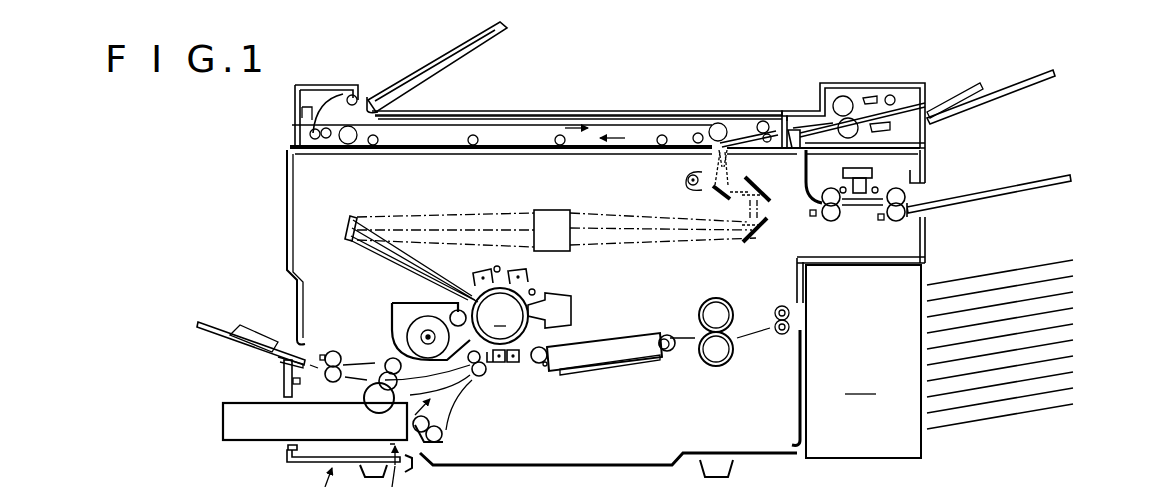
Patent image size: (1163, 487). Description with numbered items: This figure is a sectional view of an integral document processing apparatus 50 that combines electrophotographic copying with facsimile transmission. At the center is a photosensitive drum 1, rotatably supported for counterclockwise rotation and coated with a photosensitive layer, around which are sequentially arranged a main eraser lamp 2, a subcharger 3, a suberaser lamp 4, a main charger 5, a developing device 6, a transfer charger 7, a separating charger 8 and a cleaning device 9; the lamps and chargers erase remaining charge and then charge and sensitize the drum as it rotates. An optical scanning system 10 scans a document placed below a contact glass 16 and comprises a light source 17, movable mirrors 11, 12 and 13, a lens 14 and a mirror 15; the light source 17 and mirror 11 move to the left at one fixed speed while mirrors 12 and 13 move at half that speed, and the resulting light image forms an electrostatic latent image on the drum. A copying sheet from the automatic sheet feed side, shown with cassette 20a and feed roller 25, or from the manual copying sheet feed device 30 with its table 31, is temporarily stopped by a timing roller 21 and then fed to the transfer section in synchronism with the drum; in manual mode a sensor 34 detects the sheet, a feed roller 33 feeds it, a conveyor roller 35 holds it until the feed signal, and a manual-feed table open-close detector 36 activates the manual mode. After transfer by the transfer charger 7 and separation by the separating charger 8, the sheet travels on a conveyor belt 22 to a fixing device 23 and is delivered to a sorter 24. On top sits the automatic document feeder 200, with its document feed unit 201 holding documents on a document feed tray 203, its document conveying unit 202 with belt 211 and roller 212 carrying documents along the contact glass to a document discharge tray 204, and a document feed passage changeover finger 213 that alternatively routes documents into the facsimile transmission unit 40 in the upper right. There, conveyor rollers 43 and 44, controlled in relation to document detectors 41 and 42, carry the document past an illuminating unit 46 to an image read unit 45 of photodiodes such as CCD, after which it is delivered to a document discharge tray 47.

The photosensitive drum 1 is at (500, 316).
The main eraser lamp 2 is at (536, 292).
The subcharger 3 is at (530, 281).
The suberaser lamp 4 is at (497, 266).
The main charger 5 is at (478, 272).
The developing device 6 is at (408, 304).
The transfer charger 7 is at (502, 362).
The separating charger 8 is at (515, 362).
The cleaning device 9 is at (572, 310).
The optical scanning system 10 is at (607, 199).
The movable mirror 11 is at (714, 193).
The movable mirror 12 is at (760, 190).
The movable mirror 13 is at (758, 242).
The lens 14 is at (556, 210).
The mirror 15 is at (349, 218).
The contact glass 16 is at (470, 152).
The light source 17 is at (687, 180).
The paper cassette 20a is at (236, 426).
The timing roller 21 is at (475, 378).
The conveyor belt 22 is at (642, 334).
The fixing device 23 is at (714, 310).
The sorter 24 is at (939, 359).
The feed roller 25 is at (372, 406).
The manual copying sheet feed device 30 is at (262, 300).
The manual feed tray 31 is at (202, 330).
The feed roller 33 is at (340, 356).
The sensor 34 is at (323, 354).
The conveyor roller 35 is at (473, 364).
The manual-feed table open-close detector 36 is at (284, 378).
The facsimile transmission unit 40 is at (983, 153).
The document detector 41 is at (813, 217).
The document detector 42 is at (882, 221).
The conveyor roller 43 is at (836, 218).
The conveyor roller 44 is at (900, 215).
The image read unit 45 is at (922, 177).
The illuminating unit 46 is at (878, 170).
The document discharge tray 47 is at (975, 178).
The document processing apparatus 50 is at (284, 199).
The automatic document feeder 200 is at (638, 80).
The document feed unit 201 is at (882, 81).
The document conveying unit 202 is at (556, 108).
The document feed tray 203 is at (1005, 85).
The document discharge tray 204 is at (410, 84).
The conveying belt 211 is at (488, 124).
The reversing roller 212 is at (710, 126).
The document feed passage changeover finger 213 is at (785, 126).